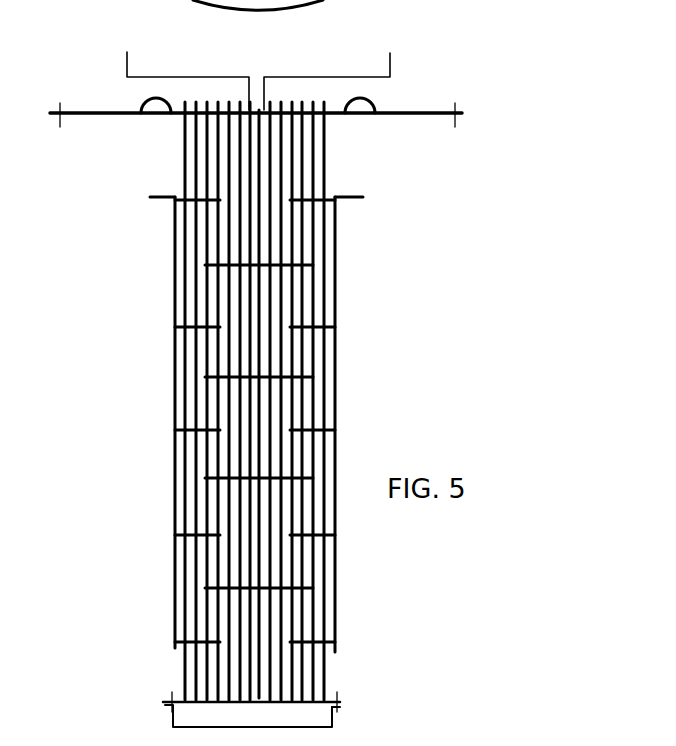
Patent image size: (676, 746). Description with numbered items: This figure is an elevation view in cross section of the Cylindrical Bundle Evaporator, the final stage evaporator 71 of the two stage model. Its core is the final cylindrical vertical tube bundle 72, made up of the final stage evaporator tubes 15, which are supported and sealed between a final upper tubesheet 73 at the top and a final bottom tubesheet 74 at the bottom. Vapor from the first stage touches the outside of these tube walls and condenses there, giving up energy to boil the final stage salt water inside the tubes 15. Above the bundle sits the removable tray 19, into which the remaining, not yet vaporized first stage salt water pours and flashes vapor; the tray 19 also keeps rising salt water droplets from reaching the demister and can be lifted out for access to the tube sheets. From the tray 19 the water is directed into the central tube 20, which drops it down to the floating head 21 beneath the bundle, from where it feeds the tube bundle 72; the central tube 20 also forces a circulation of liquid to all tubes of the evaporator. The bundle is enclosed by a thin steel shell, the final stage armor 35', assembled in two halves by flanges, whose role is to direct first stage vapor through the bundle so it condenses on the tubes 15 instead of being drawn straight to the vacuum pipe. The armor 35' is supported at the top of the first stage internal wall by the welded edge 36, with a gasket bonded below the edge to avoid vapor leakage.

The final stage evaporator tubes 15 is at (215, 157).
The tray 19 is at (392, 62).
The central tube 20 is at (257, 128).
The floating head 21 is at (173, 728).
The final stage armor 35' is at (339, 424).
The welded edge 36 is at (160, 197).
The final stage evaporator 71 is at (465, 220).
The final cylindrical vertical tube bundle 72 is at (328, 668).
The final upper tubesheet 73 is at (337, 108).
The final bottom tubesheet 74 is at (337, 708).